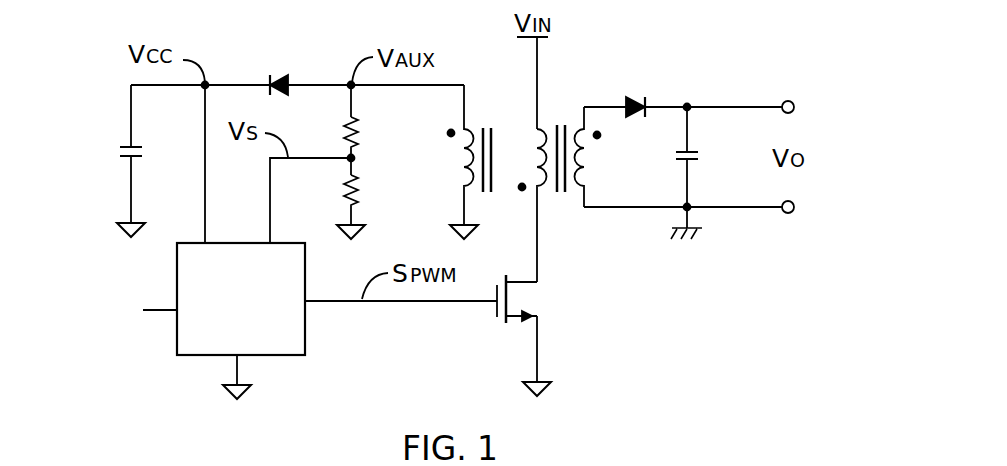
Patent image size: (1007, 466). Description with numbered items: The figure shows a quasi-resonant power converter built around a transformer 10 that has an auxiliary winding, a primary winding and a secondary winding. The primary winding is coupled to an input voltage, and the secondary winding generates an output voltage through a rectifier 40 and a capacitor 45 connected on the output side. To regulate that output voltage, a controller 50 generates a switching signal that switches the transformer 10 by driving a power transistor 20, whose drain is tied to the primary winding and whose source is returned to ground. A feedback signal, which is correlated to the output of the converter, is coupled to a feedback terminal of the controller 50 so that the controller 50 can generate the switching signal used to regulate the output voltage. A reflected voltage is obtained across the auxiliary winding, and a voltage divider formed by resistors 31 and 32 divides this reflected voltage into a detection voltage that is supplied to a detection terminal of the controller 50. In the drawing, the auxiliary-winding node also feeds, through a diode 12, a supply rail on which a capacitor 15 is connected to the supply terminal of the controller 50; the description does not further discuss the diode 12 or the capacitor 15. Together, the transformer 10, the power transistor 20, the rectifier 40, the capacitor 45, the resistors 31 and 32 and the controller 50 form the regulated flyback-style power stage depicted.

The transformer 10 is at (561, 112).
The diode 12 is at (280, 73).
The capacitor 15 is at (146, 150).
The power transistor 20 is at (538, 303).
The resistor 31 is at (363, 127).
The resistor 32 is at (363, 187).
The rectifier 40 is at (635, 97).
The capacitor 45 is at (702, 153).
The controller 50 is at (307, 335).